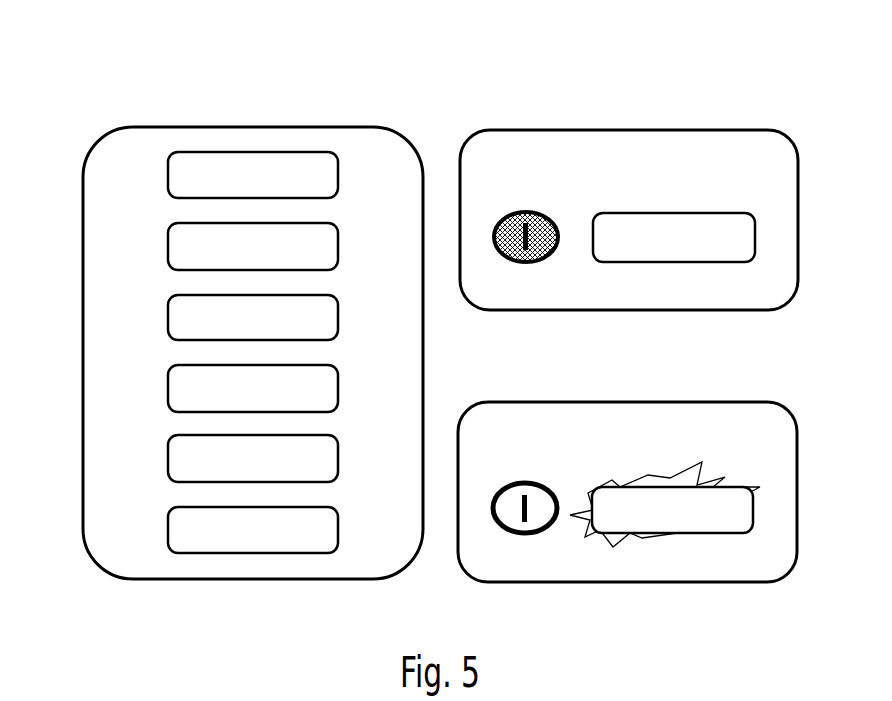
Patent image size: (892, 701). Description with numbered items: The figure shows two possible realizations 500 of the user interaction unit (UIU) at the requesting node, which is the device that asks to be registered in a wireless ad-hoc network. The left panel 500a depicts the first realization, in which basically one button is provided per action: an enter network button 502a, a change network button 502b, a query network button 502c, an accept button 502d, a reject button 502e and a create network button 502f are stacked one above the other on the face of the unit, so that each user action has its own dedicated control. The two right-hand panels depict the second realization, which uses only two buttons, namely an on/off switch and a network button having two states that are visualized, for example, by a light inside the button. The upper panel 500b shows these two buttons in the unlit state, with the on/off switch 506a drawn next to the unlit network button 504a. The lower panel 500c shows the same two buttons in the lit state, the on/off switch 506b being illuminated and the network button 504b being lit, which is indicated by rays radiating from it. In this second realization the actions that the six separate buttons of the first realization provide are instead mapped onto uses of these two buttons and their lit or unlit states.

The realizations of the user interaction unit 500 is at (440, 294).
The network menu screen 500a is at (261, 127).
The network status screen (disconnected) 500b is at (631, 130).
The network status screen (connected) 500c is at (636, 402).
The enter network button 502a is at (167, 172).
The change network button 502b is at (167, 246).
The query network button 502c is at (167, 318).
The accept button 502d is at (167, 386).
The reject button 502e is at (167, 458).
The create network button 502f is at (167, 528).
The network button 504a is at (755, 237).
The network button 504b is at (753, 510).
The on/off switch 506a is at (527, 212).
The on/off switch 506b is at (526, 483).